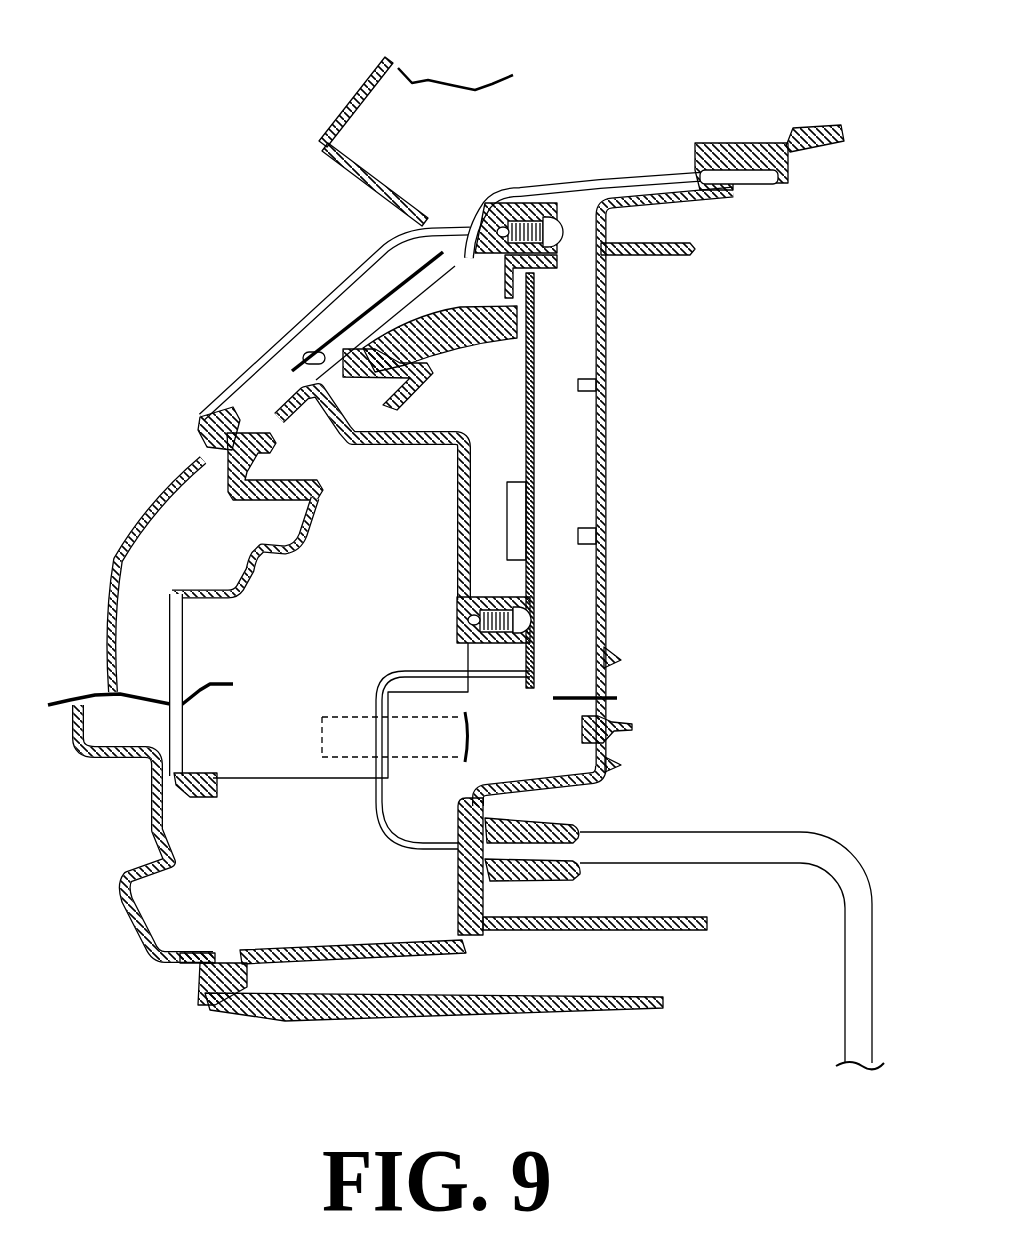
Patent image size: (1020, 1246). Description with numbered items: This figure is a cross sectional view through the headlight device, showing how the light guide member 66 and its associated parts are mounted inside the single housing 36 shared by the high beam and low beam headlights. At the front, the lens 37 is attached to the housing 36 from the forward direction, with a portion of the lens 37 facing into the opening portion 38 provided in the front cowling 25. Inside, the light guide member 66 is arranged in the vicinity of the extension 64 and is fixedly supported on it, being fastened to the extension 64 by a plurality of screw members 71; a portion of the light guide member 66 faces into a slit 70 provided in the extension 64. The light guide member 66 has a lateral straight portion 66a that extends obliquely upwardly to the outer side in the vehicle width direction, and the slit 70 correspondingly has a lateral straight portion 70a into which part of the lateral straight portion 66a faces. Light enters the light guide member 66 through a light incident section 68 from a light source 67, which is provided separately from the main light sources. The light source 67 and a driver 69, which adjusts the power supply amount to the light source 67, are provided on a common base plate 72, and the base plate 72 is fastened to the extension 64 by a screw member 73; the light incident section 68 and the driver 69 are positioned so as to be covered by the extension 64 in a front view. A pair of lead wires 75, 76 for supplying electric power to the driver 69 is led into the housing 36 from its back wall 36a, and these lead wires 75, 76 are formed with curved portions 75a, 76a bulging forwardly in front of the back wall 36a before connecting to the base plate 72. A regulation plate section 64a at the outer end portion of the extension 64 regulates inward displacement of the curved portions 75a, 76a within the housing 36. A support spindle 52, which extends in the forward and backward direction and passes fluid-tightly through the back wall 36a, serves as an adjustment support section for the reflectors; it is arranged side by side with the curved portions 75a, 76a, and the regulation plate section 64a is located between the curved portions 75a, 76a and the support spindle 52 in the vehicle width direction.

The front cowling 25 is at (350, 112).
The housing 36 is at (582, 925).
The back wall 36a is at (603, 517).
The lens 37 is at (222, 445).
The opening portion 38 is at (388, 243).
The support spindle 52 is at (323, 715).
The extension 64 is at (463, 557).
The regulation plate section 64a is at (288, 750).
The light guide member 66 is at (457, 313).
The lateral straight portion 66a is at (366, 356).
The light source 67 is at (513, 337).
The light incident section 68 is at (522, 310).
The driver 69 is at (520, 532).
The slit 70 is at (290, 370).
The lateral straight portion 70a is at (220, 450).
The screw member 71 is at (562, 232).
The base plate 72 is at (530, 574).
The screw member 73 is at (540, 616).
The lead wire 75 is at (624, 943).
The lead wire 76 is at (465, 855).
The curved portion 75a is at (432, 742).
The curved portion 76a is at (375, 713).